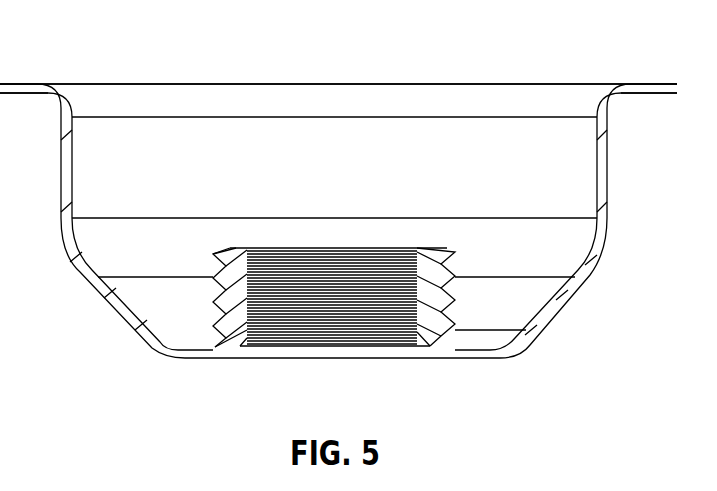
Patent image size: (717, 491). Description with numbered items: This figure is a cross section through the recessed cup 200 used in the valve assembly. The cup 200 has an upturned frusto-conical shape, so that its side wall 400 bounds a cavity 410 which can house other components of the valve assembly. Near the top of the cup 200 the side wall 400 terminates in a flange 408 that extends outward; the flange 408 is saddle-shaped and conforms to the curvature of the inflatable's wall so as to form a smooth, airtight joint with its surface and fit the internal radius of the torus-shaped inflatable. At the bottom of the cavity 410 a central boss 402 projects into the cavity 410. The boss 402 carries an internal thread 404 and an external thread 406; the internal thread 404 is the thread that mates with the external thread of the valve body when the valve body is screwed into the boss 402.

The recessed cup 200 is at (407, 78).
The side wall 400 is at (596, 248).
The central boss 402 is at (380, 326).
The internal thread 404 is at (234, 348).
The external thread 406 is at (450, 328).
The flange 408 is at (622, 90).
The cavity 410 is at (88, 102).